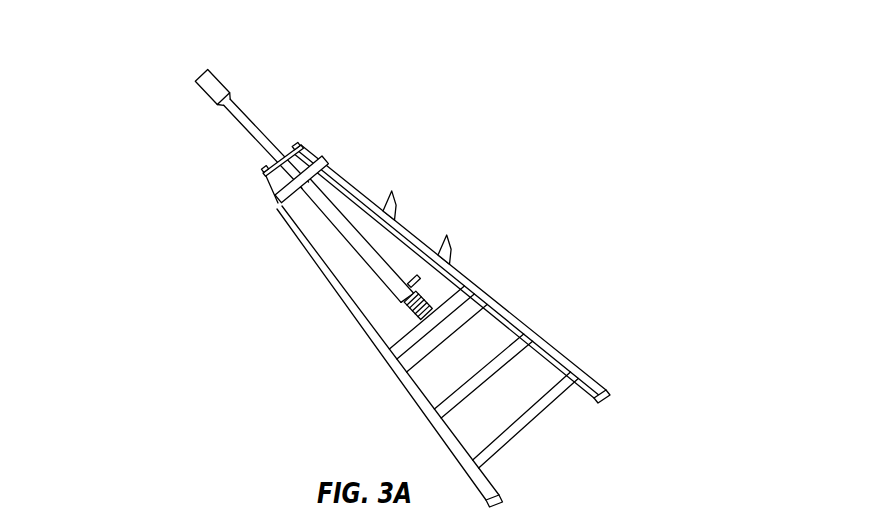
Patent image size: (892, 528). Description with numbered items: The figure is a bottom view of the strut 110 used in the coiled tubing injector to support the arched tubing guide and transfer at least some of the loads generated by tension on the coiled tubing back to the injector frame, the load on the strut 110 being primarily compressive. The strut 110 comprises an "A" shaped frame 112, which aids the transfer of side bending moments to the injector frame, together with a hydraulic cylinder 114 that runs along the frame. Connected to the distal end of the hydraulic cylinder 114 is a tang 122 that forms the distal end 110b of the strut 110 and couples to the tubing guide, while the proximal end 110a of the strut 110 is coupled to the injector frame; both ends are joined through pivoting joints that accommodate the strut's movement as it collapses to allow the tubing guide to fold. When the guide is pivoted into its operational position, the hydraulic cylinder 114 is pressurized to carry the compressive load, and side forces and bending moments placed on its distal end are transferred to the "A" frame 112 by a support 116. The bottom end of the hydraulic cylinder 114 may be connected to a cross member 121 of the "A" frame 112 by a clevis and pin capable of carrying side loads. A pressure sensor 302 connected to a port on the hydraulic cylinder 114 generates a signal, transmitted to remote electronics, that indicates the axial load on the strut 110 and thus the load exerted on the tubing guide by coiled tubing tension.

The strut 110 is at (409, 276).
The proximal end of the strut 110a is at (603, 374).
The distal end of the strut 110b is at (199, 114).
The "A" shaped frame 112 is at (527, 328).
The hydraulic cylinder 114 is at (243, 127).
The support 116 is at (279, 209).
The cross member 121 is at (465, 290).
The tang 122 is at (217, 80).
The pressure sensor 302 is at (422, 276).